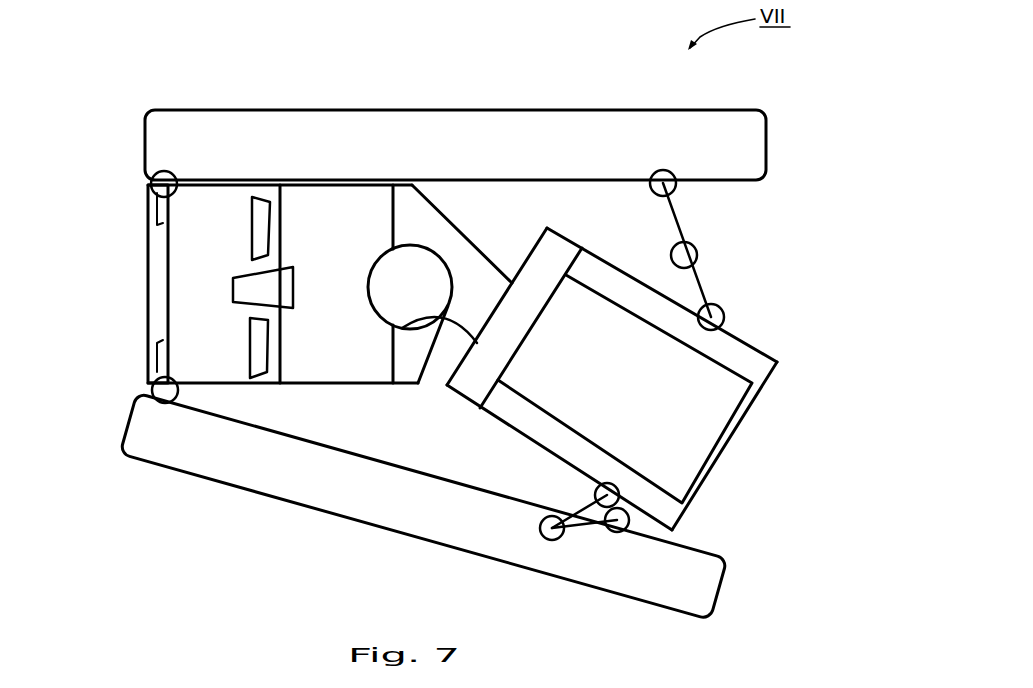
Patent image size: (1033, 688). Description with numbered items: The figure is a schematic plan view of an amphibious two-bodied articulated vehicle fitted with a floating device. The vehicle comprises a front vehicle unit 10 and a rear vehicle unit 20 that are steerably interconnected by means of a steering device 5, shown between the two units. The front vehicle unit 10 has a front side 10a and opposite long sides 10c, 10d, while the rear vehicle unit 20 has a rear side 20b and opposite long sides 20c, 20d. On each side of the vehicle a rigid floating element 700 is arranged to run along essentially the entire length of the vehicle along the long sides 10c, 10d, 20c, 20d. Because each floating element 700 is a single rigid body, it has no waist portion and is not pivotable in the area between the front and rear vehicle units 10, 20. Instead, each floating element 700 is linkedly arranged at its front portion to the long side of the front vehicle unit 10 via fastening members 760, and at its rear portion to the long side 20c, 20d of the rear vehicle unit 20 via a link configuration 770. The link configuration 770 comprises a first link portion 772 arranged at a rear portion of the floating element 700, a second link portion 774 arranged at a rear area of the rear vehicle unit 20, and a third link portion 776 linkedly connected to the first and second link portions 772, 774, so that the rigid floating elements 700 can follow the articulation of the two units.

The rigid floating element 700 is at (318, 108).
The front vehicle unit 10 is at (278, 291).
The front side 10a is at (148, 243).
The long side 10c is at (213, 385).
The long side 10d is at (227, 183).
The fastening member 760 is at (151, 184).
The steering device 5 is at (463, 258).
The rear vehicle unit 20 is at (618, 324).
The rear side 20b is at (722, 465).
The long side 20c is at (493, 417).
The long side 20d is at (599, 251).
The link configuration 770 is at (690, 227).
The first link portion 772 is at (657, 172).
The second link portion 774 is at (725, 318).
The third link portion 776 is at (696, 257).